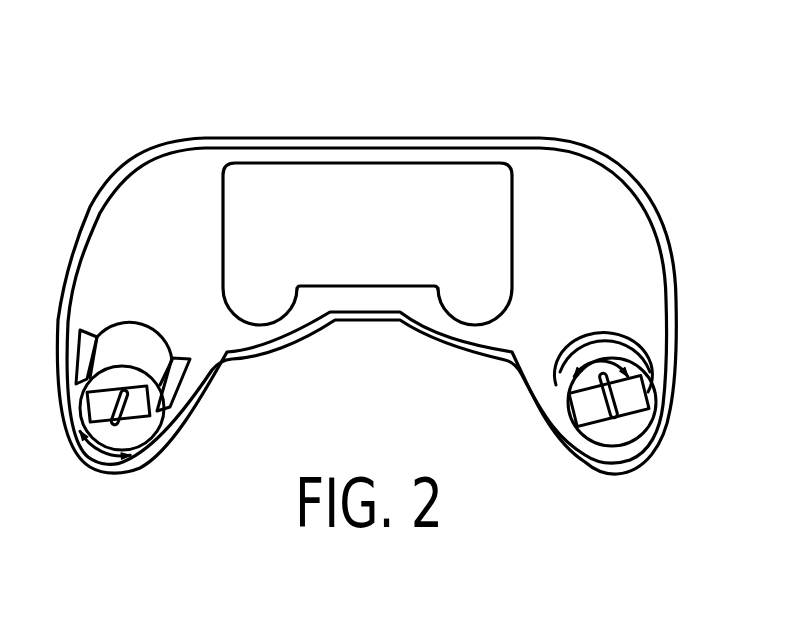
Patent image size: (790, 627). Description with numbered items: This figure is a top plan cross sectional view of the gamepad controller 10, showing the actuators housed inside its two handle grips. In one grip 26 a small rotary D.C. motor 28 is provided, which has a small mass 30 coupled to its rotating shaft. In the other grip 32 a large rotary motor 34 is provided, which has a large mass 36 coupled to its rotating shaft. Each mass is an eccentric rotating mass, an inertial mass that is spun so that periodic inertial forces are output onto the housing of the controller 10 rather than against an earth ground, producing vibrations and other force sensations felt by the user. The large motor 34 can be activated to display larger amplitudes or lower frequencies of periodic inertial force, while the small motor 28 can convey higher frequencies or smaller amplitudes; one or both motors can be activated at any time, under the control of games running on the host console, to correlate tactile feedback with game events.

The controller 10 is at (203, 96).
The grip 26 is at (147, 466).
The small rotary D.C. motor 28 is at (138, 347).
The small mass 30 is at (106, 435).
The grip 32 is at (597, 477).
The large rotary motor 34 is at (598, 333).
The large mass 36 is at (635, 440).